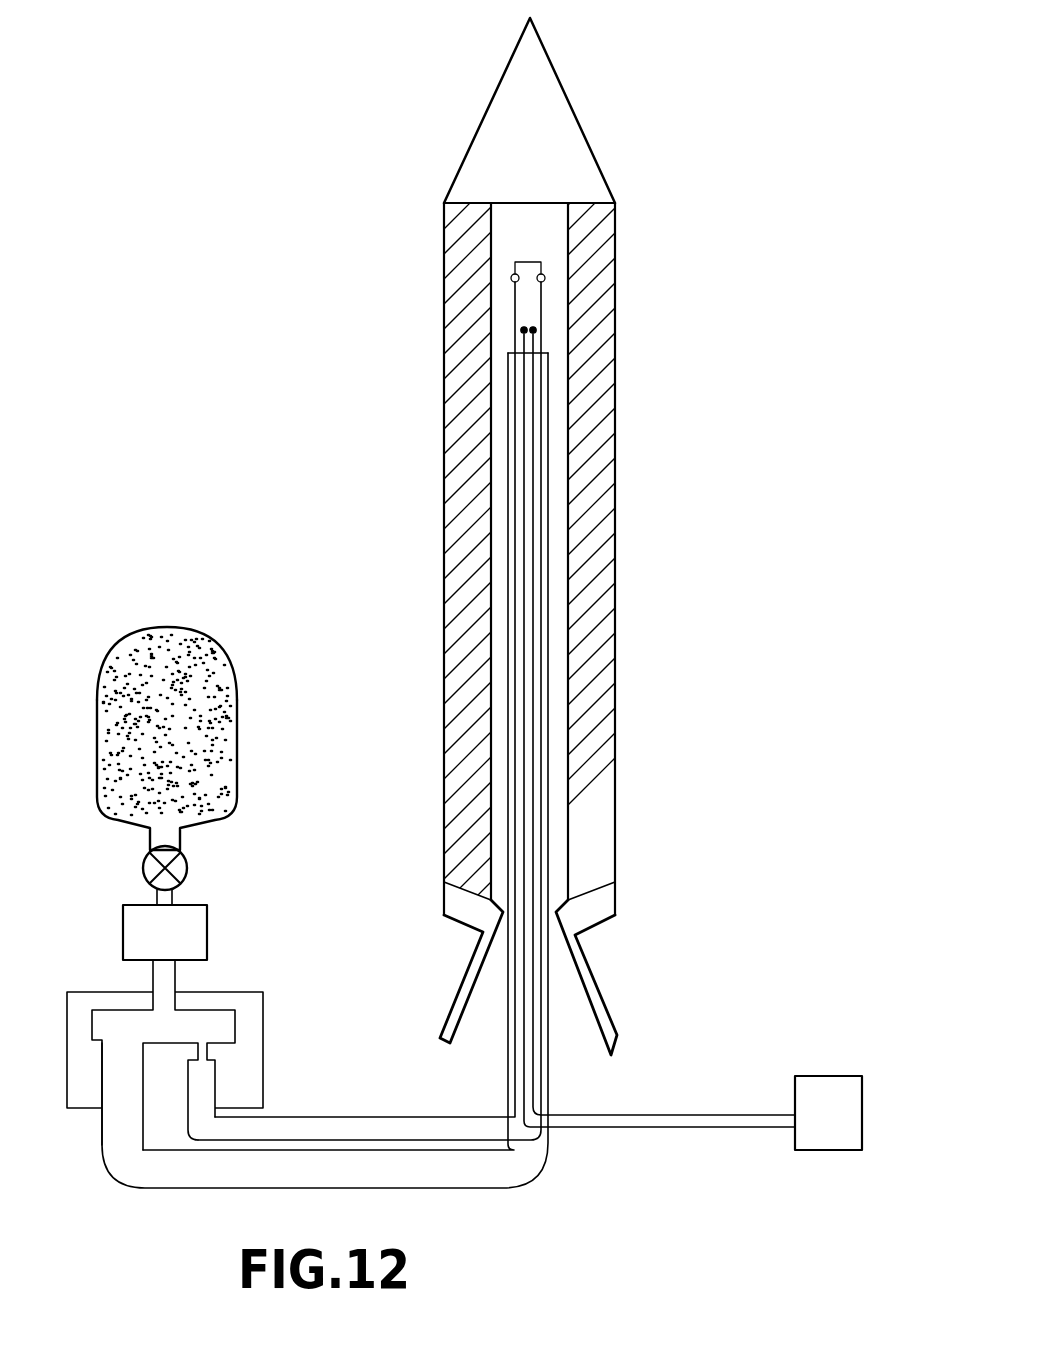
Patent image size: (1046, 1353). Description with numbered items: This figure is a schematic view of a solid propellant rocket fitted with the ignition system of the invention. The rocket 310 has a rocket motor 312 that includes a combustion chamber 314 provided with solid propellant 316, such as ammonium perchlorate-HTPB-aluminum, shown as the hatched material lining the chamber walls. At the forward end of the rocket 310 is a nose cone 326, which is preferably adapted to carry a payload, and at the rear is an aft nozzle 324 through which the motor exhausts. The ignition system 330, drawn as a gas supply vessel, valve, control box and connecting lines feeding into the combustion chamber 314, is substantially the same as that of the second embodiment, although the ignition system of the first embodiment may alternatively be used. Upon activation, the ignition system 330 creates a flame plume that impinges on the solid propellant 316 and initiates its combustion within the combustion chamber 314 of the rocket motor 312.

The rocket 310 is at (451, 598).
The rocket motor 312 is at (601, 480).
The combustion chamber 314 is at (558, 385).
The solid propellant 316 is at (606, 288).
The aft nozzle 324 is at (587, 977).
The nose cone 326 is at (578, 117).
The ignition system 330 is at (482, 403).